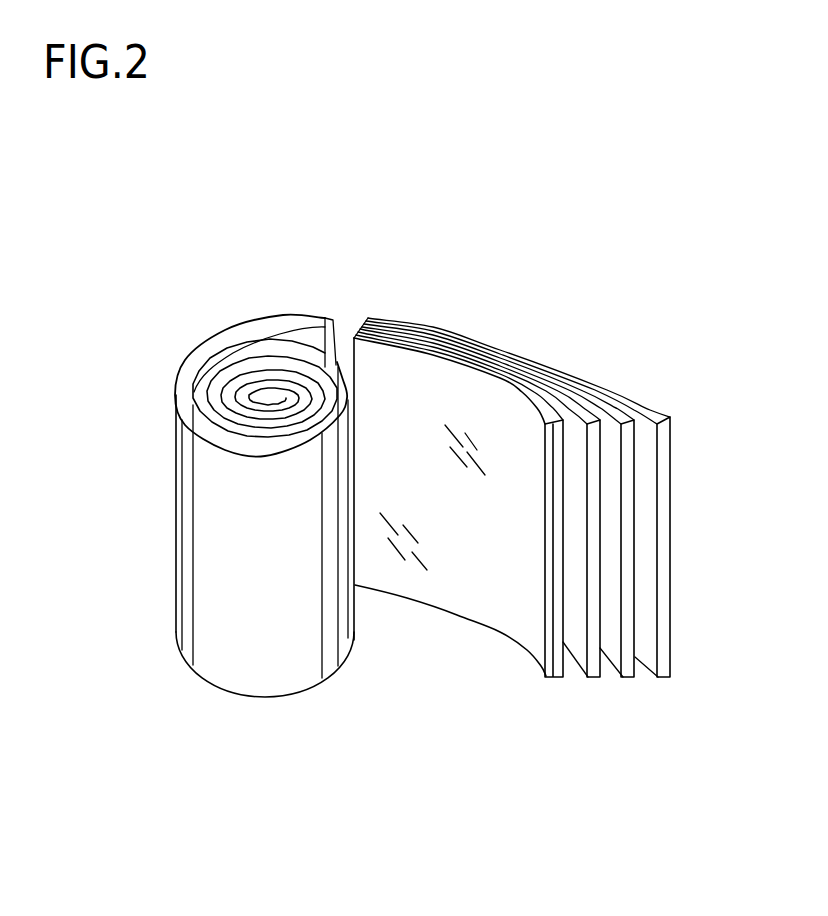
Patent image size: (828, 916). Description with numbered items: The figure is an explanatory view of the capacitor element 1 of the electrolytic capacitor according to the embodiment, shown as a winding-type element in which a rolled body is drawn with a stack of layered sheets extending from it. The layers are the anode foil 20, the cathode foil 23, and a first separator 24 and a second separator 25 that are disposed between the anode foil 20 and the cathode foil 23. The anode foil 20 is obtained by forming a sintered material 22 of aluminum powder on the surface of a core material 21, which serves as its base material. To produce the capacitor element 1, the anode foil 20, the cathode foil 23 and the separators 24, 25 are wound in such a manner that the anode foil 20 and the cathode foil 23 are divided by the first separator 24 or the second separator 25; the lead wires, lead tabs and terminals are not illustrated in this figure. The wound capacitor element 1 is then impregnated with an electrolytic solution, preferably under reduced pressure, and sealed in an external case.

The capacitor element 1 is at (203, 322).
The anode foil 20 is at (393, 325).
The core material 21 is at (555, 679).
The sintered material 22 is at (522, 622).
The cathode foil 23 is at (607, 425).
The first separator 24 is at (568, 415).
The second separator 25 is at (648, 430).